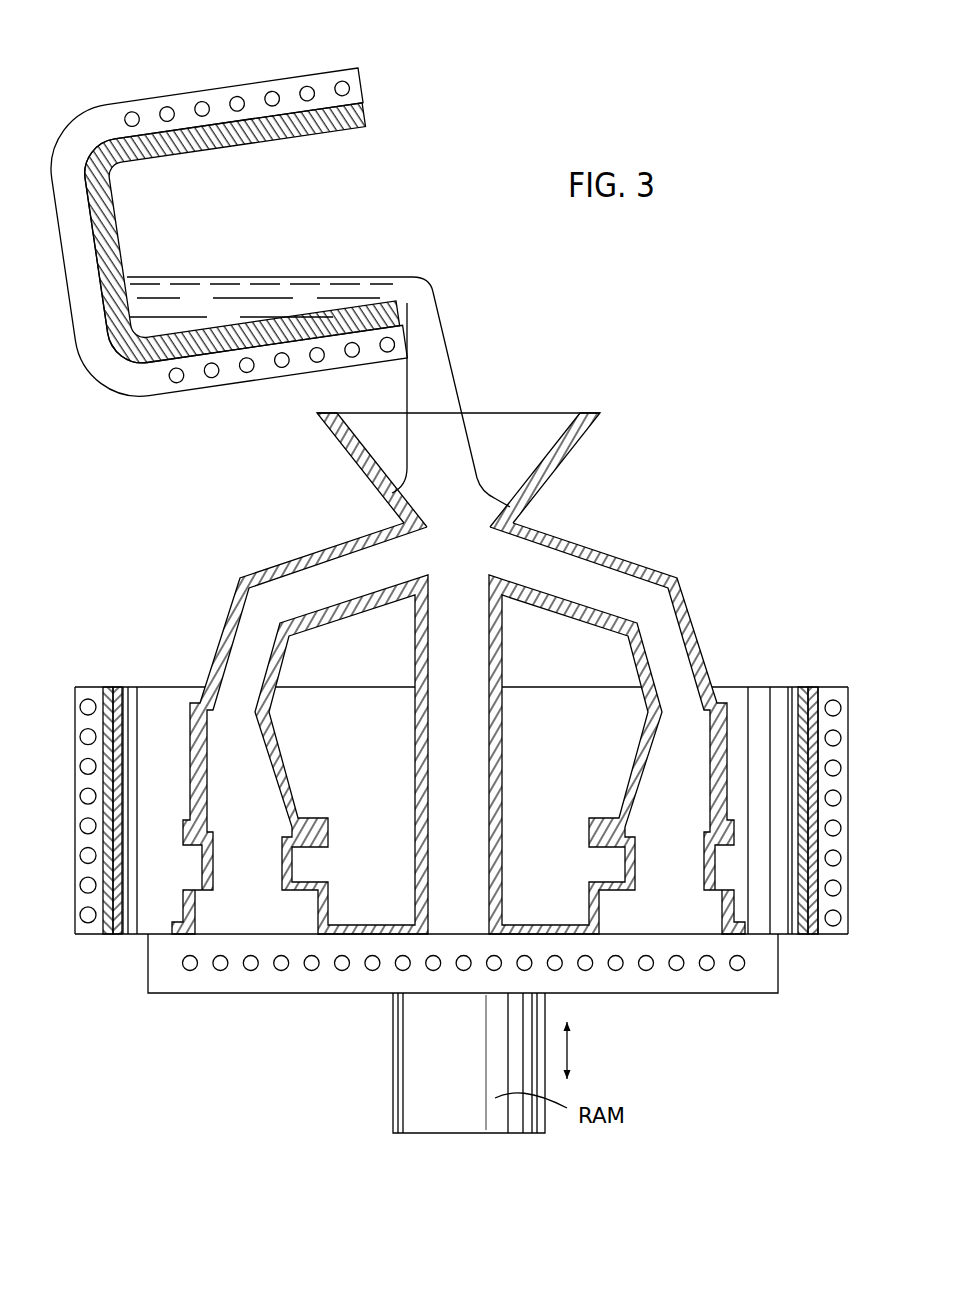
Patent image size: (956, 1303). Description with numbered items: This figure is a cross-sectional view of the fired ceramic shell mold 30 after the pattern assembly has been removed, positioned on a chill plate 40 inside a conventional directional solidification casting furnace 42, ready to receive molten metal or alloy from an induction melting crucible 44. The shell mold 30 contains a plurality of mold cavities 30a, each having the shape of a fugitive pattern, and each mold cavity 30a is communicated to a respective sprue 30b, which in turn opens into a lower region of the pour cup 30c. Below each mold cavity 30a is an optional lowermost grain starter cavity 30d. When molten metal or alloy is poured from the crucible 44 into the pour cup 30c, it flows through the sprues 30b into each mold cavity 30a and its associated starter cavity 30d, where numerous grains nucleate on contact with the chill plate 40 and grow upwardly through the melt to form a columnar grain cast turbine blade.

The induction melting crucible 44 is at (176, 405).
The ceramic shell mold 30 is at (678, 580).
The mold cavity 30a is at (686, 874).
The sprue 30b is at (660, 638).
The pour cup 30c is at (576, 448).
The grain starter cavity 30d is at (688, 926).
The chill plate 40 is at (765, 975).
The directional solidification casting furnace 42 is at (806, 683).